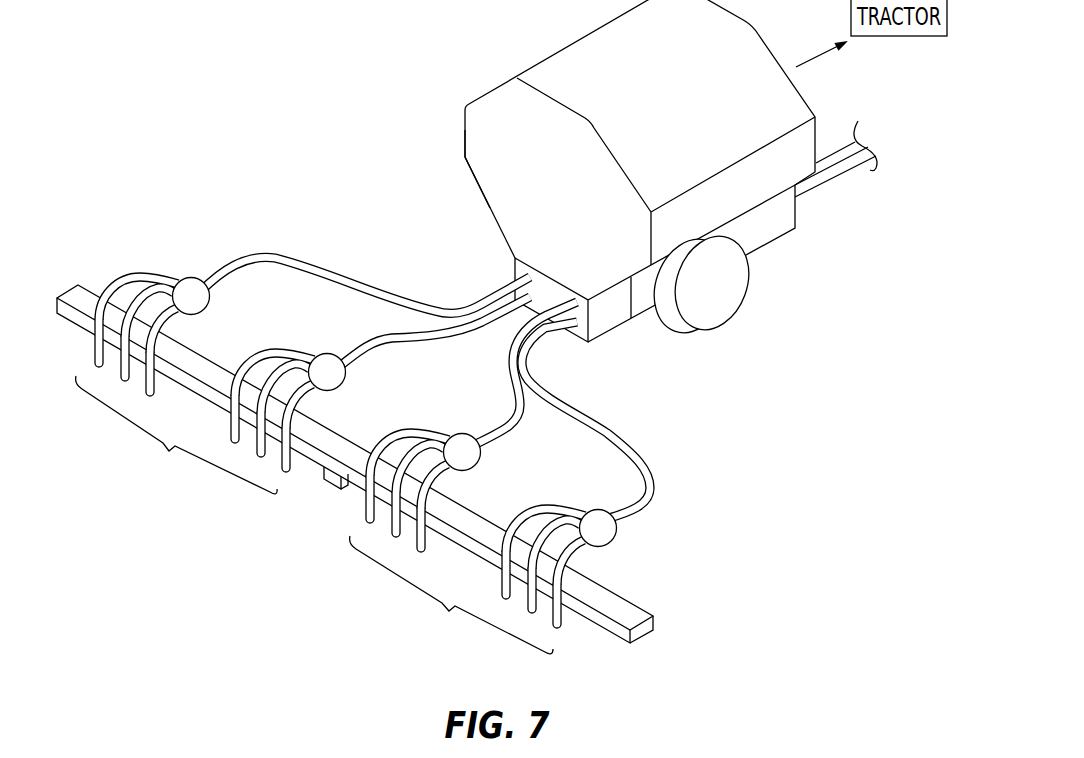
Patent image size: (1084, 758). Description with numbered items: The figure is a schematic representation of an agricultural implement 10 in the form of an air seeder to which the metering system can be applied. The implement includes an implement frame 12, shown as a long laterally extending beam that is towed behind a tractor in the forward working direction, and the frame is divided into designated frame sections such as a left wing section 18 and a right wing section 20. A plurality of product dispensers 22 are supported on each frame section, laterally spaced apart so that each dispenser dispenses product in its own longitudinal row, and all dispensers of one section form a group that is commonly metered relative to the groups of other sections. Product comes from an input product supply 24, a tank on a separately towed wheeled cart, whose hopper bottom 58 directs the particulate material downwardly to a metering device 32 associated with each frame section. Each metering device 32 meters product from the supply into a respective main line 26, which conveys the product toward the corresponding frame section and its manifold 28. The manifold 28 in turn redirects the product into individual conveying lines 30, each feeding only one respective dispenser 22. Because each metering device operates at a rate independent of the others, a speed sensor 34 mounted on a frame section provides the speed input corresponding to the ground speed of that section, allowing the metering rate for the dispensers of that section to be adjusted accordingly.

The agricultural implement 10 is at (361, 439).
The implement frame 12 is at (620, 593).
The left wing section 18 is at (177, 435).
The right wing section 20 is at (451, 595).
The product dispenser 22 is at (499, 592).
The input product supply 24 is at (572, 44).
The main line 26 is at (262, 253).
The manifold 28 is at (184, 278).
The individual conveying line 30 is at (570, 548).
The metering device 32 is at (510, 262).
The speed sensor 34 is at (325, 482).
The hopper bottom 58 is at (489, 208).